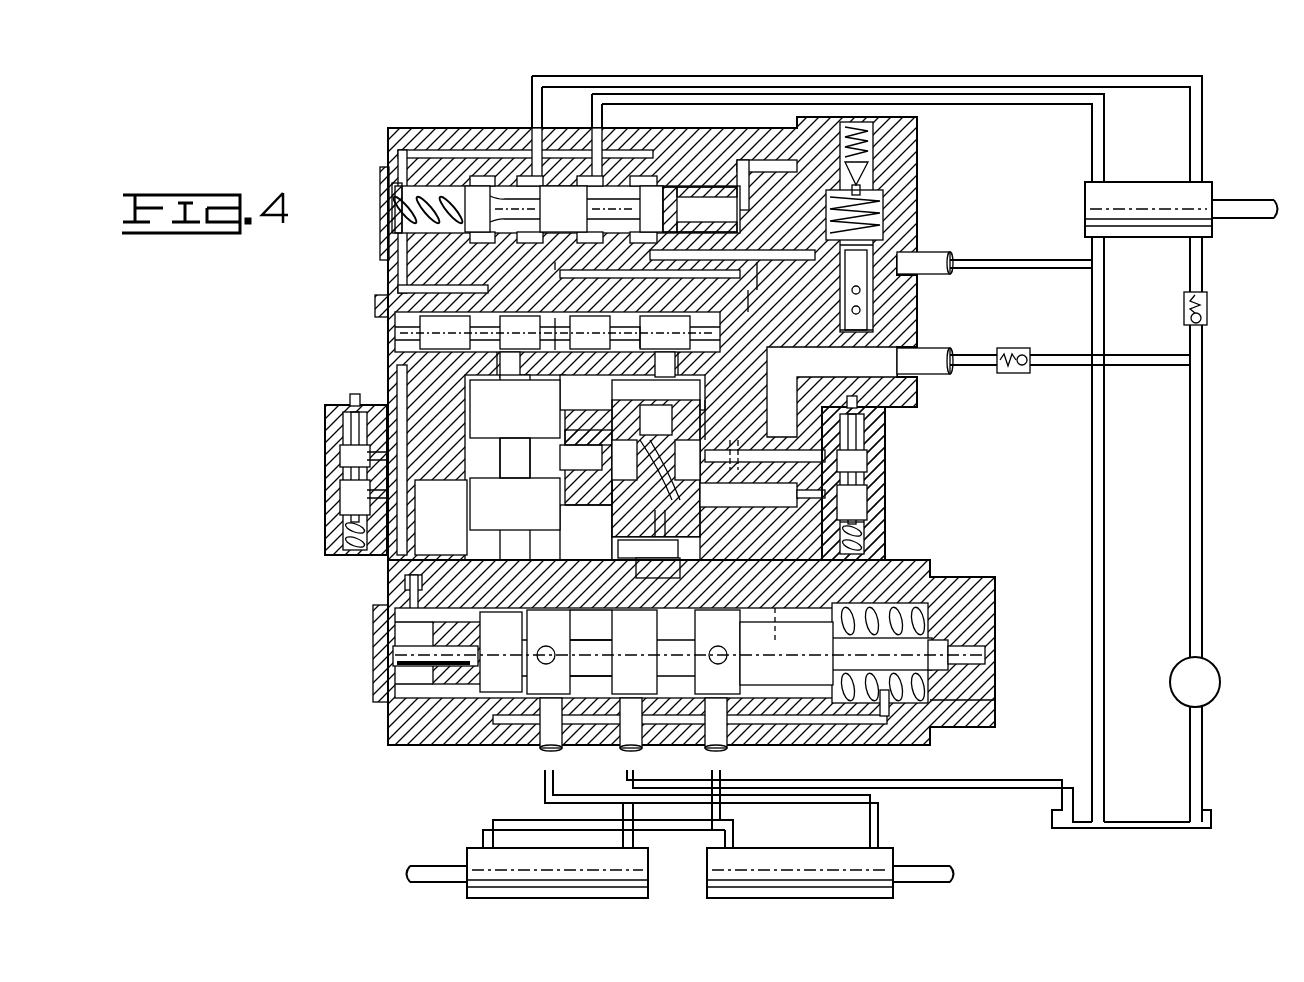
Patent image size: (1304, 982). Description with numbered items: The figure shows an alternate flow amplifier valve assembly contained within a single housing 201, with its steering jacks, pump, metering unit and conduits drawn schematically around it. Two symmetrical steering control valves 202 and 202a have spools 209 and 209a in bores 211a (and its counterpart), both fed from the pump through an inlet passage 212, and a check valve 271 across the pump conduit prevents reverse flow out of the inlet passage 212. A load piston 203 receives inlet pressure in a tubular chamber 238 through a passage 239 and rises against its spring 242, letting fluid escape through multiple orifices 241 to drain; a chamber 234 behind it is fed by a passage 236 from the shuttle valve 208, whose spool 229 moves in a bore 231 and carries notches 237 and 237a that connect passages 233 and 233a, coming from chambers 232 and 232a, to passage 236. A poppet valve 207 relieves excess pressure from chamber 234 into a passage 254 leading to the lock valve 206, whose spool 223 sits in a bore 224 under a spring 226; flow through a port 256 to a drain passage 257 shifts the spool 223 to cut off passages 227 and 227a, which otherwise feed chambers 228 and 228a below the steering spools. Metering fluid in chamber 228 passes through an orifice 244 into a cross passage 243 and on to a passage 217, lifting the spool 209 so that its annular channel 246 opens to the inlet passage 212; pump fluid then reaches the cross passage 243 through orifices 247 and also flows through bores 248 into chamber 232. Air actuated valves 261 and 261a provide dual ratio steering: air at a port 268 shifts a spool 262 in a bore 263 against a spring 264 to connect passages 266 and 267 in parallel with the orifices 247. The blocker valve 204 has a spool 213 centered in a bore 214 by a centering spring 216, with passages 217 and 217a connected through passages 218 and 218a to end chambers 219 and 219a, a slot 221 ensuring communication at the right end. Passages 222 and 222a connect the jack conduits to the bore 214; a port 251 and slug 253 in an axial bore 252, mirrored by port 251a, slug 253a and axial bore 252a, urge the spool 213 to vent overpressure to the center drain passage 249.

The housing 201 is at (418, 128).
The lock valve 206 is at (428, 178).
The lock valve spool 223 is at (392, 192).
The spring 226 is at (392, 216).
The bore 224 is at (392, 228).
The passage 227a is at (415, 262).
The shuttle valve 208 is at (448, 310).
The shuttle spool bore 231 is at (392, 342).
The passage 227 is at (625, 292).
The shuttle spool 229 is at (560, 300).
The notch 237a is at (555, 318).
The notch 237 is at (645, 325).
The port 256 is at (700, 209).
The passage 254 is at (788, 168).
The passage 257 is at (757, 270).
The passage 236 is at (748, 298).
The poppet valve 207 is at (870, 160).
The spring 242 is at (880, 192).
The chamber 234 is at (885, 200).
The load piston 203 is at (900, 230).
The orifices 241 is at (887, 292).
The tubular chamber 238 is at (887, 305).
The passage 239 is at (887, 325).
The bore 211a is at (472, 383).
The passage 233a is at (503, 372).
The steering control valve 202a is at (482, 467).
The steering control valve 202 is at (633, 456).
The chamber 232a is at (492, 407).
The chamber 232 is at (632, 403).
The passage 233 is at (682, 372).
The bores 248 is at (705, 400).
The steering valve spool 209 is at (700, 437).
The steering valve spool 209a is at (540, 505).
The annular channel 246 is at (606, 463).
The chamber 228a is at (495, 548).
The orifices 247 is at (603, 525).
The cross passage 243 is at (603, 550).
The orifice 244 is at (668, 540).
The chamber 228 is at (658, 568).
The inlet passage 212 is at (827, 370).
The passage 217 is at (773, 506).
The air actuated valve 261a is at (312, 432).
The passage 217a is at (335, 556).
The air actuated valve 261 is at (900, 471).
The port 268 is at (857, 404).
The passage 266 is at (848, 442).
The passage 267 is at (855, 470).
The spool 262 is at (865, 480).
The bore 263 is at (868, 515).
The spring 264 is at (875, 548).
The check valve 271 is at (1018, 373).
The blocker valve 204 is at (428, 690).
The blocker spool 213 is at (388, 620).
The axial bore 252a is at (405, 600).
The slug 253a is at (410, 641).
The chamber 219 is at (410, 665).
The bore 214 is at (410, 672).
The centering spring 216 is at (858, 583).
The chamber 219a is at (998, 605).
The slug 253 is at (975, 665).
The passage 218a is at (800, 748).
The slot 221 is at (940, 732).
The port 251 is at (642, 641).
The port 251a is at (613, 658).
The passage 218 is at (616, 578).
The axial bore 252 is at (778, 605).
The passage 222a is at (545, 756).
The center drain passage 249 is at (620, 754).
The passage 222 is at (742, 752).